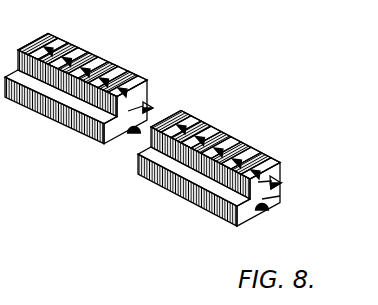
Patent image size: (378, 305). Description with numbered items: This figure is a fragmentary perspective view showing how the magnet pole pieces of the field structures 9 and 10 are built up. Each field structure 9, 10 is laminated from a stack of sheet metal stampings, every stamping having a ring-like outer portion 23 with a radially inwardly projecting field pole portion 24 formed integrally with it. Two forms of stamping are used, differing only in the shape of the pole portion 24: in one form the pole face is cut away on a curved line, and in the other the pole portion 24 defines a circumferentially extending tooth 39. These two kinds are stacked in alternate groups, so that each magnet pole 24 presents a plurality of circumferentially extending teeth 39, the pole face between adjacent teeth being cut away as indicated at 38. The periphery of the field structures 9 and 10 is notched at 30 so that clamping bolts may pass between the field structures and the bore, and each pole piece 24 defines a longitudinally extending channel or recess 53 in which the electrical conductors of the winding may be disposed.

The field structure 9 is at (82, 140).
The field structure 10 is at (207, 209).
The cut-away pole face portion 38 is at (118, 71).
The circumferentially extending tooth 39 is at (146, 112).
The field pole portion 24 is at (131, 112).
The notch 30 is at (128, 137).
The channel or recess 53 is at (273, 182).
The ring-like outer portion 23 is at (276, 202).